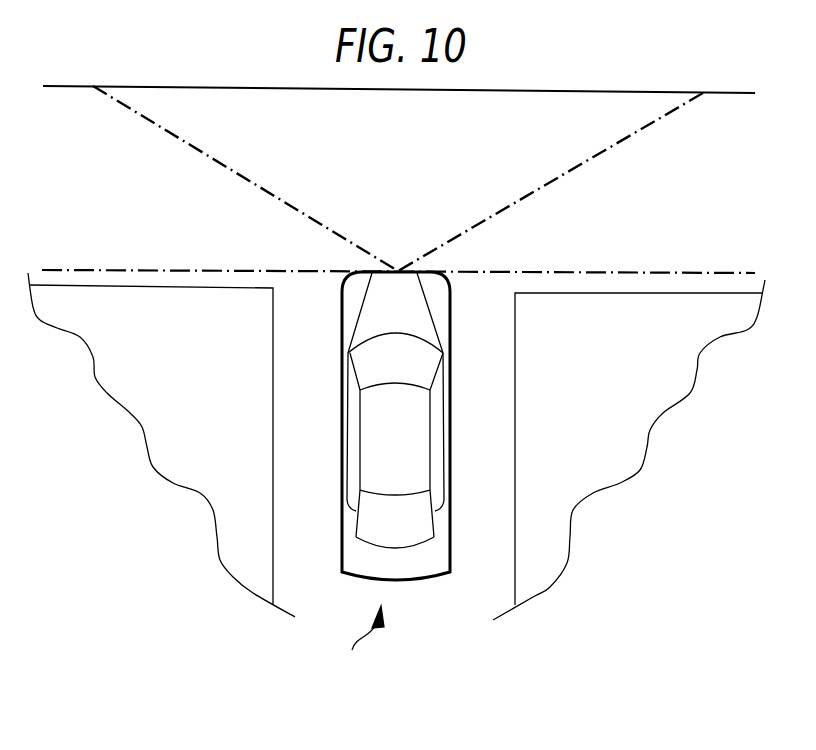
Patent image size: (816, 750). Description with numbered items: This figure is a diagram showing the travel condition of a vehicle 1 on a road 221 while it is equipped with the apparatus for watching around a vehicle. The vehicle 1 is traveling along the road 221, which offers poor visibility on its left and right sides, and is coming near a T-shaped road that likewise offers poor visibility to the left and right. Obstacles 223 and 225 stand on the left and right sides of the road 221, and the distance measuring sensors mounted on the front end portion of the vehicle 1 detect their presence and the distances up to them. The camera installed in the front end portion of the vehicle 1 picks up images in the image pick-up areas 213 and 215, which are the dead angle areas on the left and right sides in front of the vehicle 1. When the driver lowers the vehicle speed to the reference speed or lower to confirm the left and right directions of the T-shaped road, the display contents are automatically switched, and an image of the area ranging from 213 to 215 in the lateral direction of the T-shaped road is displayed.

The vehicle 1 is at (398, 270).
The image pick-up area 213 is at (246, 180).
The image pick-up area 215 is at (551, 181).
The road 221 is at (360, 645).
The obstacle 223 is at (193, 467).
The obstacle 225 is at (593, 470).